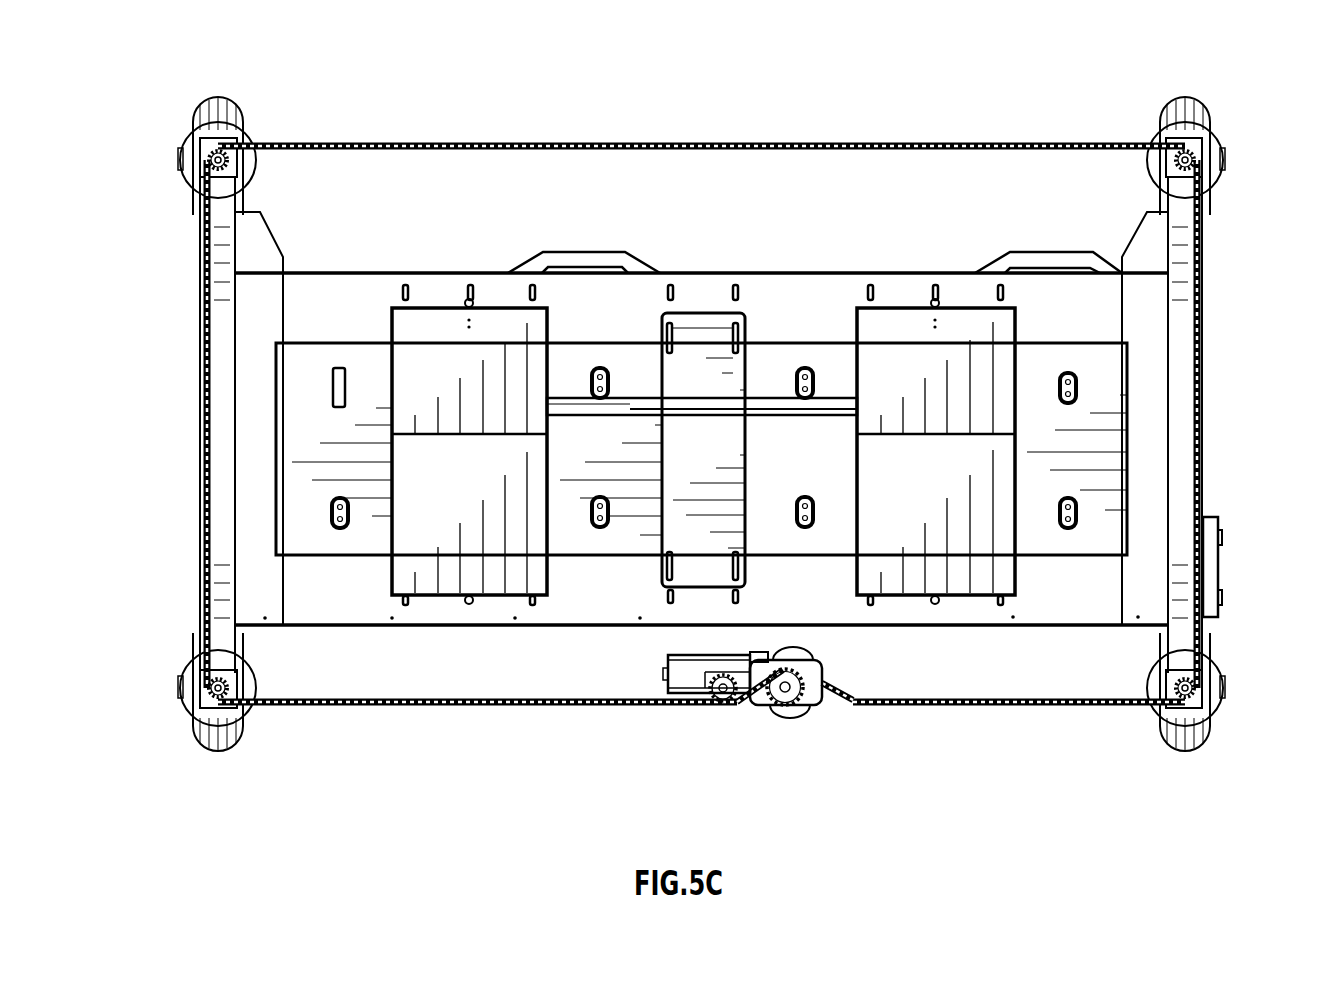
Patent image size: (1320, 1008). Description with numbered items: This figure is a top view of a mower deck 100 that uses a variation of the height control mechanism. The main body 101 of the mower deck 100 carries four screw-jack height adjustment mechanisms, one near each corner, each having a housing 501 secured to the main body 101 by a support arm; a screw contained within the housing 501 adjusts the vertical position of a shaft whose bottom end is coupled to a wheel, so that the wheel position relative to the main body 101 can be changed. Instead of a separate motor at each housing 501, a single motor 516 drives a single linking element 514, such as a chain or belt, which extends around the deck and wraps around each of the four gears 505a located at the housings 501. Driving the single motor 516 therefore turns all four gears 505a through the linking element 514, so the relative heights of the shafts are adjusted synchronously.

The mower deck 100 is at (296, 55).
The main body 101 is at (364, 268).
The housing 501 is at (198, 171).
The gear 505a is at (207, 152).
The linking element 514 is at (1028, 707).
The motor 516 is at (793, 706).